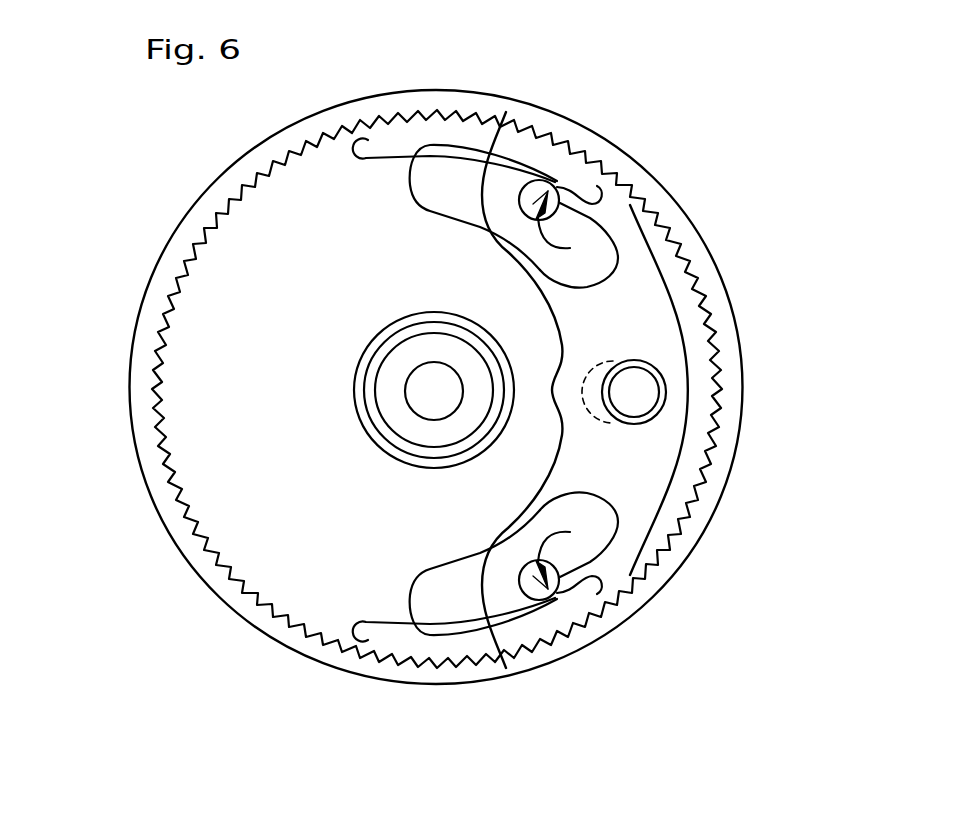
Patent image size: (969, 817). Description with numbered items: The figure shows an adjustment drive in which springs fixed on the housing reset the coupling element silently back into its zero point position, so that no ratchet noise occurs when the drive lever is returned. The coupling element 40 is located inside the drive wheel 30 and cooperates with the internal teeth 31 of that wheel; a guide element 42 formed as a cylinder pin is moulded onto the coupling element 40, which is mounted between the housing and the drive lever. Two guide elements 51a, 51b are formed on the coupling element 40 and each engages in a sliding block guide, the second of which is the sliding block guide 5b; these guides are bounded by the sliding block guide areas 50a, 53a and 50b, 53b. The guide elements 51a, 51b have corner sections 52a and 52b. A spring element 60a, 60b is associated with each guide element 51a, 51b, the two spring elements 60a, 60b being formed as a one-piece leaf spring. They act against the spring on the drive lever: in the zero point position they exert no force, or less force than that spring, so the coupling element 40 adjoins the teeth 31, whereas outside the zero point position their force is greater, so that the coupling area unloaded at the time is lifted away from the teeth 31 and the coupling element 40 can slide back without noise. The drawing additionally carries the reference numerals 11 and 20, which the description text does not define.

The pawl carrier lever 11 is at (600, 425).
The hub shaft 20 is at (425, 397).
The drive wheel 30 is at (718, 342).
The internal teeth 31 is at (690, 272).
The coupling element 40 is at (640, 513).
The guide element 42 is at (641, 397).
The sliding block guide area 50a is at (450, 212).
The sliding block guide area 50b is at (317, 572).
The sliding block guide 5b is at (622, 537).
The guide element 51a is at (537, 197).
The guide element 51b is at (540, 585).
The corner section 52a is at (572, 248).
The corner section 52b is at (593, 583).
The sliding block guide area 53a is at (610, 243).
The sliding block guide area 53b is at (577, 535).
The spring element 60a is at (400, 157).
The spring element 60b is at (410, 637).